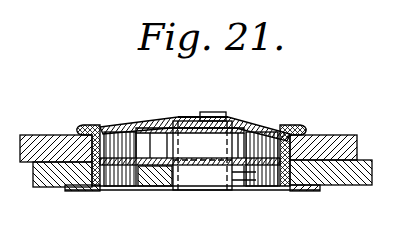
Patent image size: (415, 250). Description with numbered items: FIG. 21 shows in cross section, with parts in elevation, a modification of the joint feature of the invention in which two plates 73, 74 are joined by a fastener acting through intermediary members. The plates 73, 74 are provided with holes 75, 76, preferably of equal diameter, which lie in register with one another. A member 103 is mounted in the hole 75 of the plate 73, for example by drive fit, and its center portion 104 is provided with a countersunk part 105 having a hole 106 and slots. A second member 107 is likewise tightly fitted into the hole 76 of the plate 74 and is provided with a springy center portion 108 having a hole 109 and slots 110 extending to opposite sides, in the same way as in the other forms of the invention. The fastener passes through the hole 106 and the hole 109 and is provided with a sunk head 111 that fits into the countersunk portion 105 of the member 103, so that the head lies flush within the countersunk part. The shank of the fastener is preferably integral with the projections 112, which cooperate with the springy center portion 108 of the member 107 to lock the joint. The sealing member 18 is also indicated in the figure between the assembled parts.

The sealing member 18 is at (213, 107).
The plate 73 is at (330, 144).
The plate 74 is at (345, 172).
The hole 75 is at (66, 135).
The hole 76 is at (70, 190).
The member 103 is at (285, 119).
The center portion 104 is at (110, 128).
The countersunk part 105 is at (150, 126).
The hole 106 is at (218, 116).
The member 107 is at (117, 192).
The springy center portion 108 is at (273, 193).
The hole 109 is at (153, 192).
The slots 110 is at (205, 190).
The sunk head 111 is at (226, 122).
The projections 112 is at (158, 192).